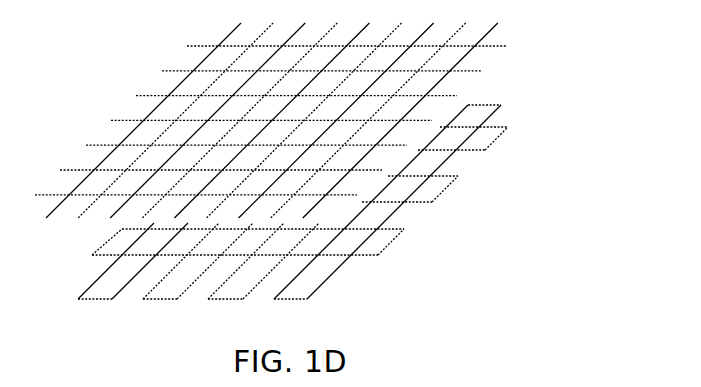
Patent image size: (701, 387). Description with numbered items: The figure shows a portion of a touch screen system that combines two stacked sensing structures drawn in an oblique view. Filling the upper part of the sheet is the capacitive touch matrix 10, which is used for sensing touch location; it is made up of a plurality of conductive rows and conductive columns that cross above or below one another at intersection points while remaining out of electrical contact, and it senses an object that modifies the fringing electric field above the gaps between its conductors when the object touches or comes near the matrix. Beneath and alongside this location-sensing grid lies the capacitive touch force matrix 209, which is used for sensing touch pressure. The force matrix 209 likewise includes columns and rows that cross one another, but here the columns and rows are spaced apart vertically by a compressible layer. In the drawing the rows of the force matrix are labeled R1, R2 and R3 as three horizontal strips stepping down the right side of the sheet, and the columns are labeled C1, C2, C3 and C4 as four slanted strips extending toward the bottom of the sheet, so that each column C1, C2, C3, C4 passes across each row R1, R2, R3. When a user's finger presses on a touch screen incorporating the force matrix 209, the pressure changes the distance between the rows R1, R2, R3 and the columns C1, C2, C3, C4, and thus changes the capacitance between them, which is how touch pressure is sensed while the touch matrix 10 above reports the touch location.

The capacitive touch matrix 10 is at (103, 85).
The capacitive touch force matrix 209 is at (387, 218).
The row electrode 1 R1 is at (477, 140).
The row electrode 2 R2 is at (426, 189).
The row electrode 3 R3 is at (268, 242).
The column electrode 1 C1 is at (133, 277).
The column electrode 2 C2 is at (198, 277).
The column electrode 3 C3 is at (263, 277).
The column electrode 4 C4 is at (385, 295).